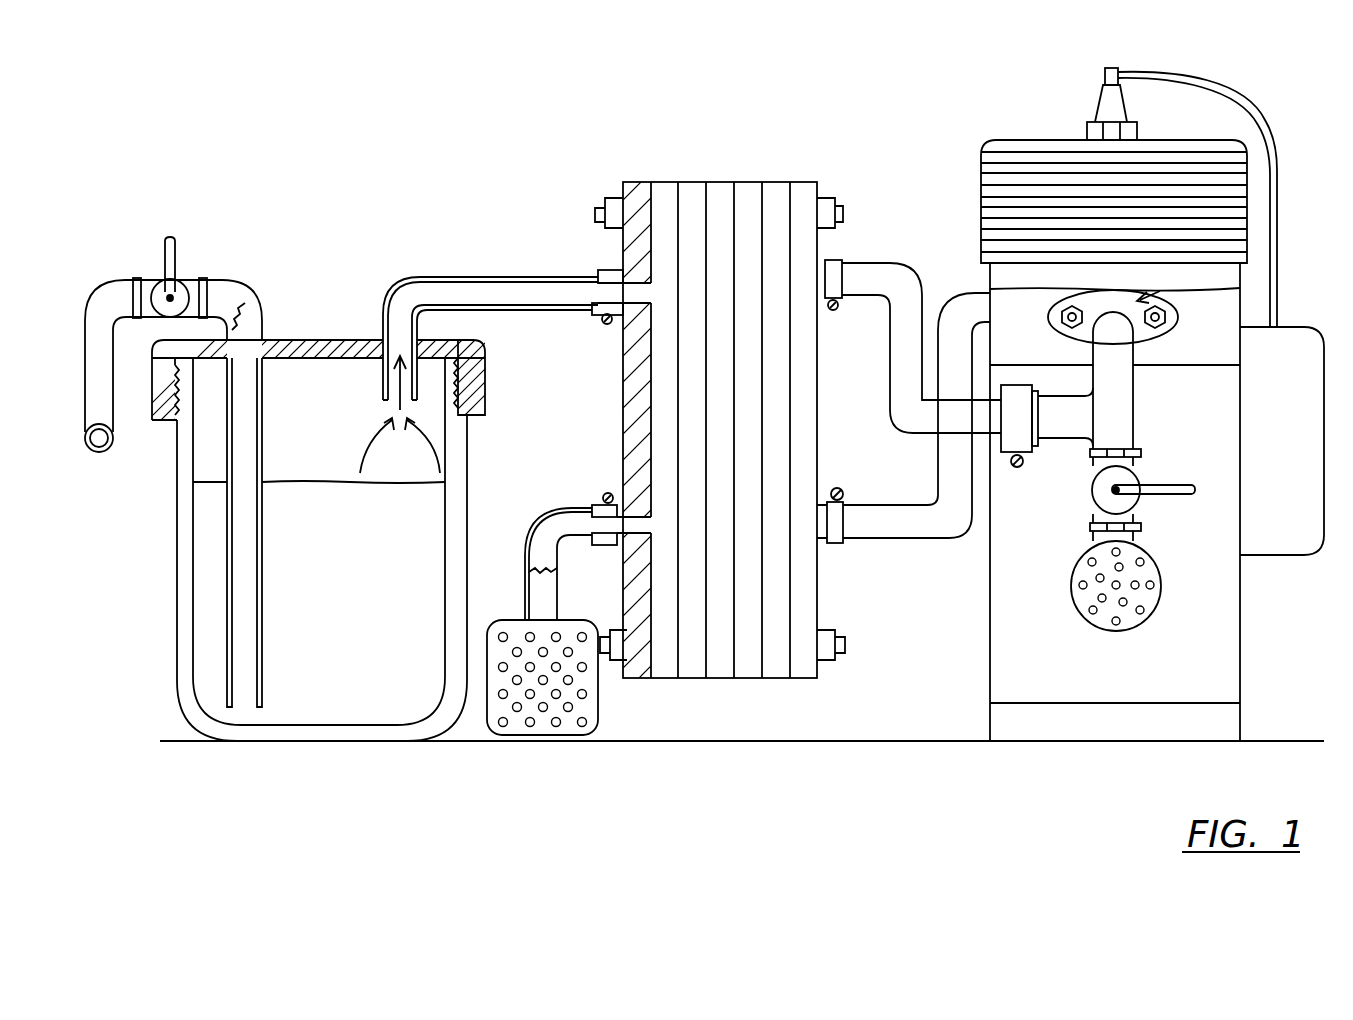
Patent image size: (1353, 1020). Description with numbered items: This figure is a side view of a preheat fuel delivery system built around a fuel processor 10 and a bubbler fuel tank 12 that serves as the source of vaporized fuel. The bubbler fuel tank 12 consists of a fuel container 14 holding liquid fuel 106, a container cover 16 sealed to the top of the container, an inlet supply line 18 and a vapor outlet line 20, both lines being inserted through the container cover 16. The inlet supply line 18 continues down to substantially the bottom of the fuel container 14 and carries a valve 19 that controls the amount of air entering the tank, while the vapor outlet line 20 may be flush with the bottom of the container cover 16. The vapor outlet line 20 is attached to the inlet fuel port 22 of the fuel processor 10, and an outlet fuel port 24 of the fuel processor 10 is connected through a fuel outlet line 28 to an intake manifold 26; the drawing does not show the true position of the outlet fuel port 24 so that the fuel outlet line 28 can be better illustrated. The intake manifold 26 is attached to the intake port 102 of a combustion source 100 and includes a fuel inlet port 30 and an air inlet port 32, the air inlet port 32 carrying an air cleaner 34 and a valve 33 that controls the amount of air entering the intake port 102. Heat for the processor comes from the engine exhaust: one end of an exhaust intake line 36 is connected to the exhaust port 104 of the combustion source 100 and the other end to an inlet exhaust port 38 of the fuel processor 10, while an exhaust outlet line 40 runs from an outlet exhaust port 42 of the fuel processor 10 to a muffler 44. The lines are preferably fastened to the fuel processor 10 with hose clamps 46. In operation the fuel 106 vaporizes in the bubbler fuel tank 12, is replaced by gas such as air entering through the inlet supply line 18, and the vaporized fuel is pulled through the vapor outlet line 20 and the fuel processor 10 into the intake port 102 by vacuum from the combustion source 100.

The fuel processor 10 is at (692, 180).
The bubbler fuel tank 12 is at (358, 205).
The fuel container 14 is at (178, 633).
The container cover 16 is at (292, 338).
The inlet supply line 18 is at (110, 290).
The valve 19 is at (177, 252).
The vapor outlet line 20 is at (485, 275).
The inlet fuel port 22 is at (637, 290).
The outlet fuel port 24 is at (822, 262).
The intake manifold 26 is at (1240, 288).
The fuel outlet line 28 is at (893, 335).
The fuel inlet port 30 is at (1055, 430).
The air inlet port 32 is at (1090, 521).
The valve 33 is at (1124, 500).
The air cleaner 34 is at (1150, 598).
The exhaust intake line 36 is at (900, 528).
The inlet exhaust port 38 is at (828, 543).
The exhaust outlet line 40 is at (537, 528).
The outlet exhaust port 42 is at (562, 527).
The muffler 44 is at (543, 732).
The hose clamps 46 is at (837, 486).
The combustion source 100 is at (961, 118).
The intake port 102 is at (1108, 287).
The exhaust port 104 is at (985, 298).
The fuel 106 is at (315, 703).